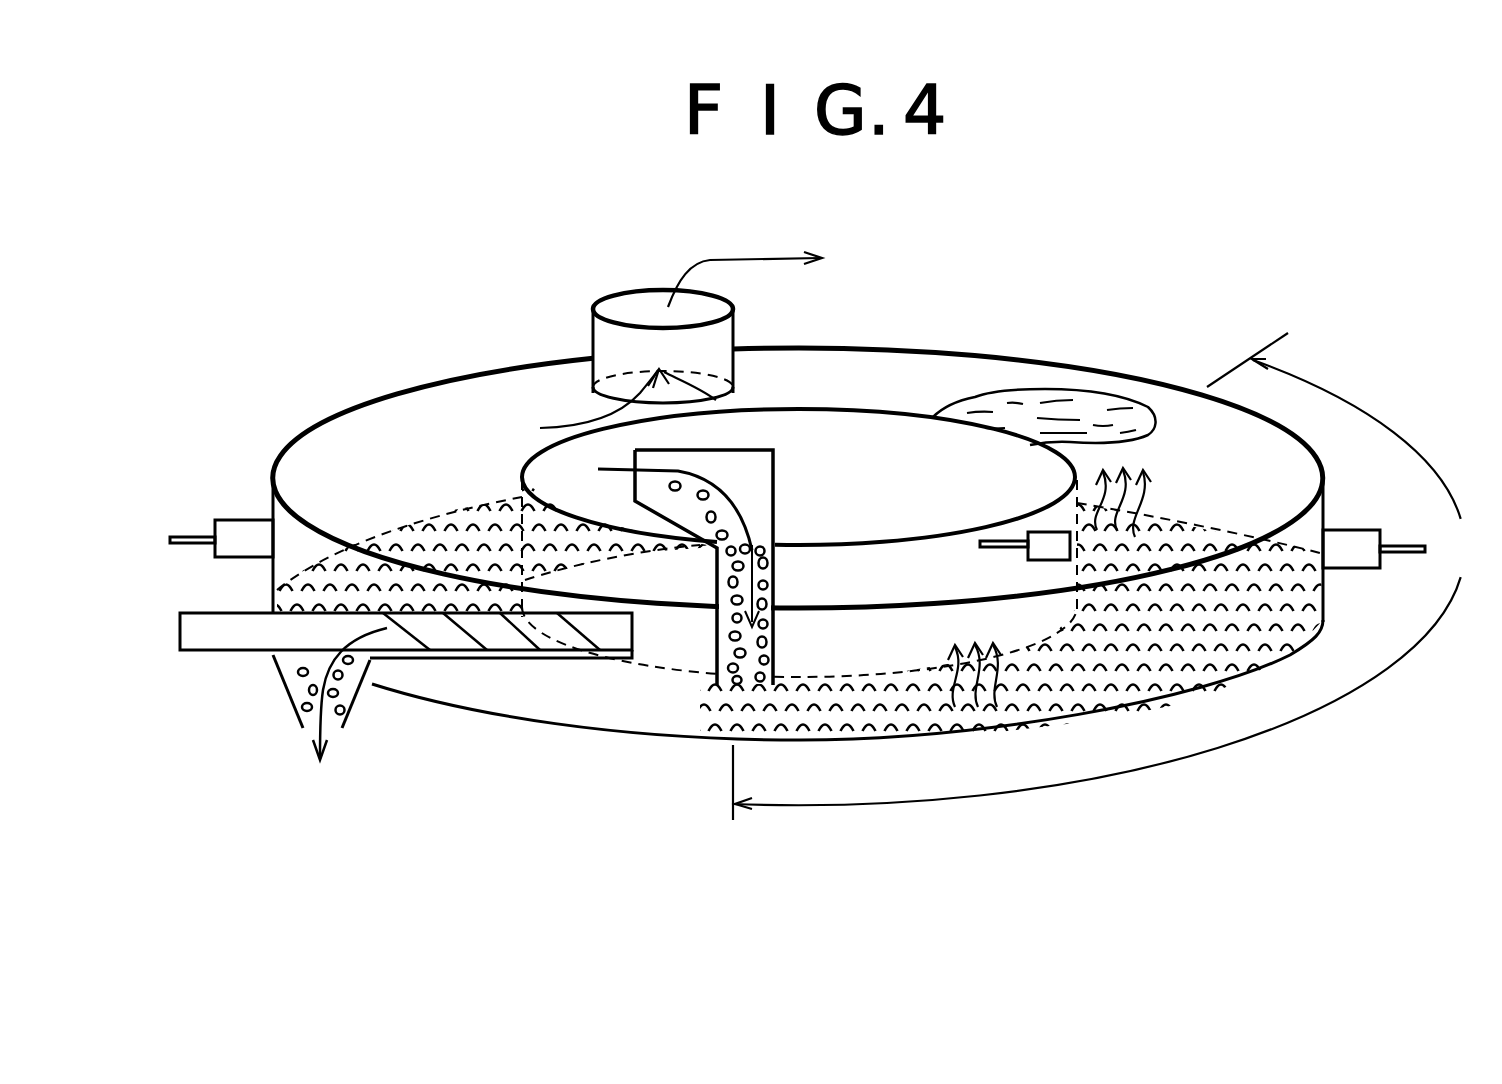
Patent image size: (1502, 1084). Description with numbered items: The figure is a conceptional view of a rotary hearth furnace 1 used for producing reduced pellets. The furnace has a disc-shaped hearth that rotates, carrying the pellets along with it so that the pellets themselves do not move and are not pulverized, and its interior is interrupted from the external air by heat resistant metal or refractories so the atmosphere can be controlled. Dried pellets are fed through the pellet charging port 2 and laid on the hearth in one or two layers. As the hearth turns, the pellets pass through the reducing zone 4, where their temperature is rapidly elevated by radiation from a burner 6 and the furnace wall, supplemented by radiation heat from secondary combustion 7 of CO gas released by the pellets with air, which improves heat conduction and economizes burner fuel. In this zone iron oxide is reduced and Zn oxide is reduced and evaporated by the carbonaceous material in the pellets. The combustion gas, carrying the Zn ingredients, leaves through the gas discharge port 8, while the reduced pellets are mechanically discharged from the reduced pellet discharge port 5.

The rotary hearth furnace 1 is at (1163, 370).
The pellet charging port 2 is at (717, 548).
The reducing zone 4 is at (1101, 576).
The reduced pellet discharge port 5 is at (213, 640).
The burner 6 is at (1043, 540).
The secondary combustion 7 is at (1083, 413).
The gas discharge port 8 is at (633, 305).